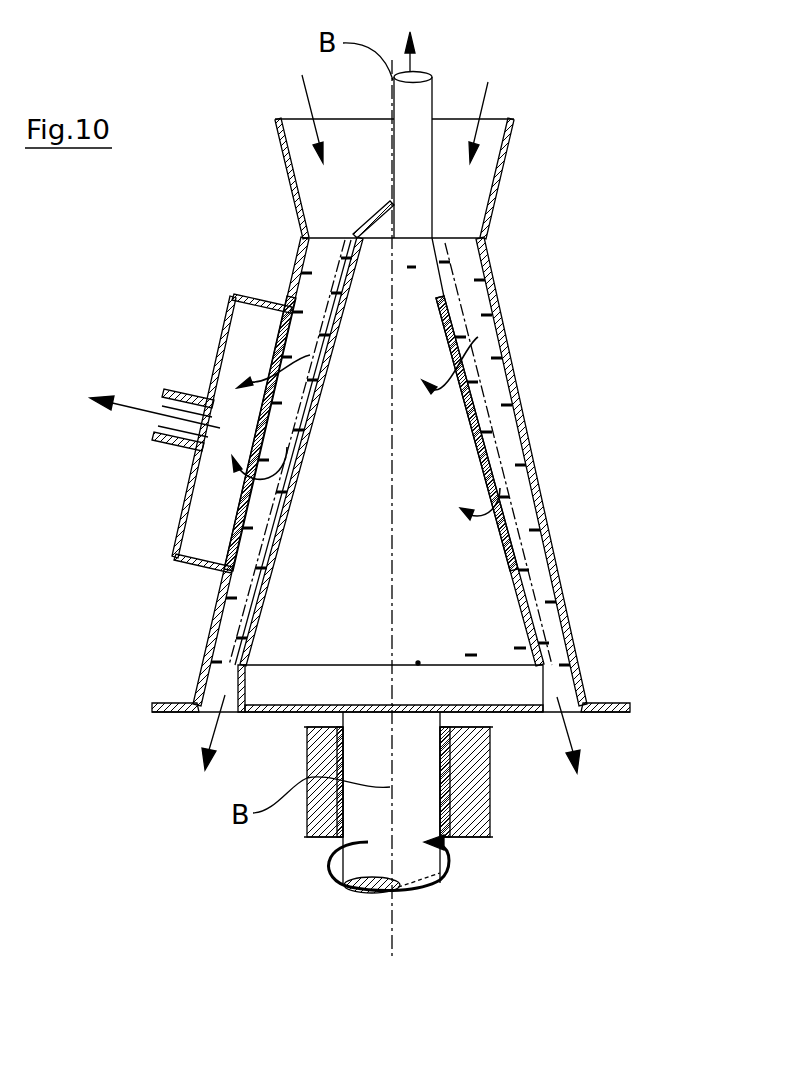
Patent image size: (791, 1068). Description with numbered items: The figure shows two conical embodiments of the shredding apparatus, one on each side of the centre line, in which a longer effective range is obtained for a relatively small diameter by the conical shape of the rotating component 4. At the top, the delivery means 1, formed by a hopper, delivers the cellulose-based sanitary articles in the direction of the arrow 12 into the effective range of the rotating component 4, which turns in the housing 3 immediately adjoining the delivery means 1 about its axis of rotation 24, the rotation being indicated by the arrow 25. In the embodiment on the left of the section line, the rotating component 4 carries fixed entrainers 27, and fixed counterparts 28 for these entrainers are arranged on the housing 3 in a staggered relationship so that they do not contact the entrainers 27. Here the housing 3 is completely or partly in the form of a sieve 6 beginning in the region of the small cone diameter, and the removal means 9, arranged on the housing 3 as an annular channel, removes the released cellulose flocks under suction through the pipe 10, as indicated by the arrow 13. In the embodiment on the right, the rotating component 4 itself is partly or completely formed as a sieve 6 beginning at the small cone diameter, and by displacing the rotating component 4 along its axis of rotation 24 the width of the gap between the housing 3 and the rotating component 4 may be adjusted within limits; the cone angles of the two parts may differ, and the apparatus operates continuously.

The delivery means 1 is at (313, 183).
The housing 3 is at (301, 268).
The rotating component 4 is at (490, 686).
The sieve 6 is at (480, 337).
The removal means 9 is at (213, 490).
The pipe 10 is at (422, 102).
The arrow 12 is at (300, 93).
The arrow 13 is at (413, 63).
The axis of rotation 24 is at (390, 905).
The arrow 25 is at (333, 862).
The entrainers 27 is at (460, 332).
The counterparts 28 is at (520, 466).